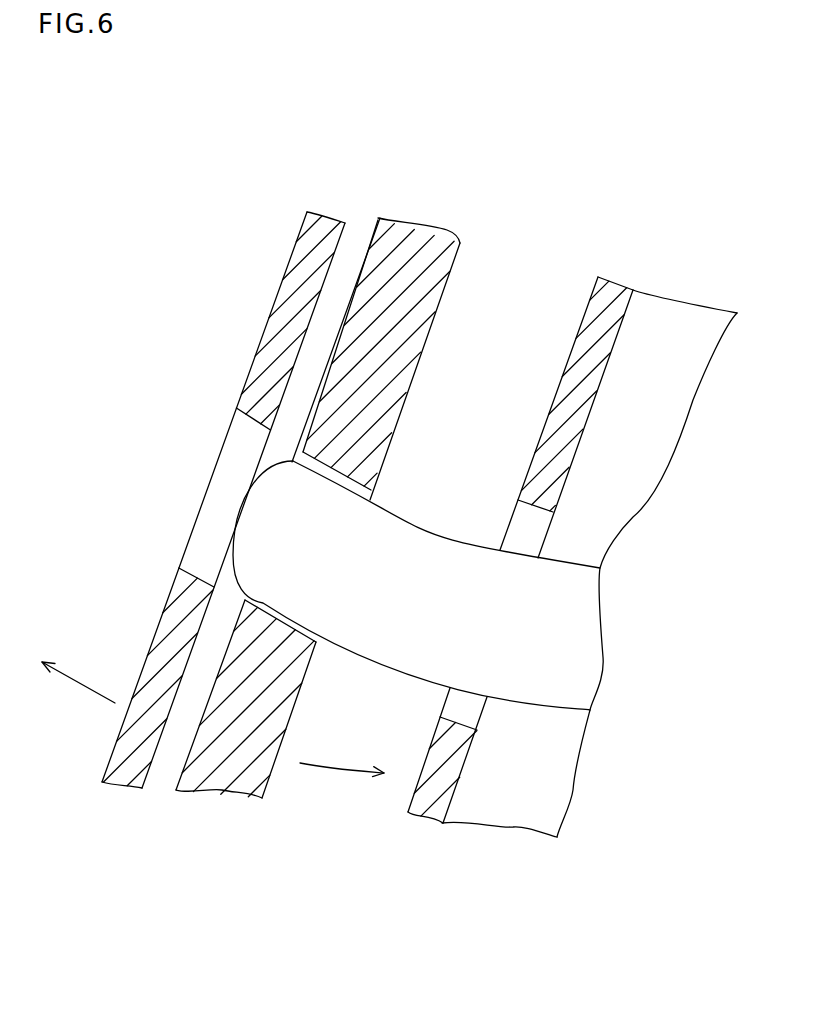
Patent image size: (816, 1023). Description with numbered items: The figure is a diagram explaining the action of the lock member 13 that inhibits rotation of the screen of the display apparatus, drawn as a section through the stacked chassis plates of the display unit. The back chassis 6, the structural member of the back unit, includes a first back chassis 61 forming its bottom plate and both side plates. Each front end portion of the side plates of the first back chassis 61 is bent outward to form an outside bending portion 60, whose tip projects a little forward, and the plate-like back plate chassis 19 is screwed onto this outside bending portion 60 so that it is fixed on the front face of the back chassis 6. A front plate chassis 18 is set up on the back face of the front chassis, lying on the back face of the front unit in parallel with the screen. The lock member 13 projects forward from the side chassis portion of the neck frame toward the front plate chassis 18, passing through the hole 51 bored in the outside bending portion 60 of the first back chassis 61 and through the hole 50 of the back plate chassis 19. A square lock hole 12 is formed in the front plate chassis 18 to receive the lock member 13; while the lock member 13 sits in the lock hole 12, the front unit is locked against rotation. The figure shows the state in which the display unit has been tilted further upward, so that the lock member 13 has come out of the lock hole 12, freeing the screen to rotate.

The back chassis 6 is at (572, 546).
The lock hole 12 is at (223, 500).
The lock member 13 is at (403, 523).
The front plate chassis 18 is at (282, 283).
The back plate chassis 19 is at (427, 307).
The hole 50 is at (313, 643).
The hole 51 is at (475, 717).
The outside bending portion 60 is at (593, 391).
The first back chassis 61 is at (665, 310).